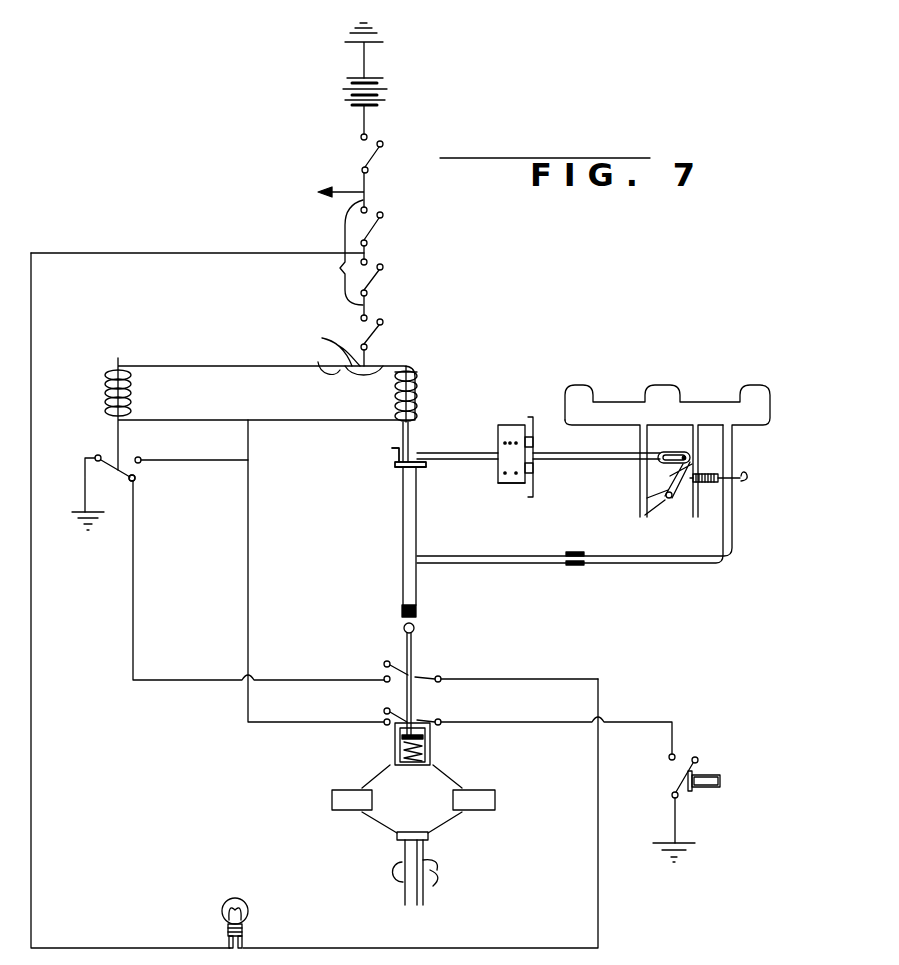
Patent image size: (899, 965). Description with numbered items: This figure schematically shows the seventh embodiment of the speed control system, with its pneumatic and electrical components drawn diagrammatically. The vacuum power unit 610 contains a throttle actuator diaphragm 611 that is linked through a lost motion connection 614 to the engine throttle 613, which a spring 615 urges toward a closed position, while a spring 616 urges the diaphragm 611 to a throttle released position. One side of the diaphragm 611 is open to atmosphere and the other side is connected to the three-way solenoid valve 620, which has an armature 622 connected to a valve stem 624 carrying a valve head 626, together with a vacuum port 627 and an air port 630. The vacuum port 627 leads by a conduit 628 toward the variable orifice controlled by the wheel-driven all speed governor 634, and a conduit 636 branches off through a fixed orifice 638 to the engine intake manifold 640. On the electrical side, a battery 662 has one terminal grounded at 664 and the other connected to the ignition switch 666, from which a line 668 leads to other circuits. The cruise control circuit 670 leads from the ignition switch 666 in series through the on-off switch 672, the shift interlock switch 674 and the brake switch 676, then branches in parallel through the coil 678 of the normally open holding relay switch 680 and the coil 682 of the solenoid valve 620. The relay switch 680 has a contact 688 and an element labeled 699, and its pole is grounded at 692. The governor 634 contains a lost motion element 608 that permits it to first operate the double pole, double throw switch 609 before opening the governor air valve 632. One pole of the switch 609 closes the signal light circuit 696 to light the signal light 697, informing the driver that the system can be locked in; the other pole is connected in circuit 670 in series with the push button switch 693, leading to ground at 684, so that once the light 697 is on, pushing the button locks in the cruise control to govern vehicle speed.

The ground 664 is at (378, 34).
The battery 662 is at (385, 83).
The ignition switch 666 is at (376, 157).
The line to other circuits 668 is at (345, 192).
The cruise control circuit line 670 is at (702, 815).
The on-off switch 672 is at (378, 229).
The shift interlock switch 674 is at (378, 281).
The brake switch 676 is at (375, 330).
The coil of holding relay switch 678 is at (131, 393).
The coil of solenoid valve 682 is at (394, 388).
The armature 622 is at (413, 384).
The three-way solenoid valve 620 is at (390, 440).
The valve stem 624 is at (410, 424).
The air port 630 is at (409, 440).
The valve head 626 is at (420, 456).
The vacuum port 627 is at (400, 470).
The conduit 628 is at (404, 503).
The throttle actuator diaphragm 611 is at (530, 440).
The vacuum power unit 610 is at (508, 418).
The spring 616 is at (500, 488).
The engine intake manifold 640 is at (740, 412).
The conduit 636 is at (502, 565).
The fixed orifice 638 is at (570, 552).
The lost motion connection 614 is at (672, 450).
The engine throttle 613 is at (655, 502).
The spring 615 is at (705, 482).
The holding relay switch 680 is at (108, 446).
The ground 692 is at (95, 541).
The contact of relay switch 688 is at (142, 458).
The contact 699 is at (136, 480).
The signal light circuit 696 is at (135, 572).
The governor air valve 632 is at (416, 629).
The double pole, double throw switch 609 is at (418, 712).
The lost motion element 608 is at (432, 752).
The governor 634 is at (370, 834).
The push button switch 693 is at (706, 776).
The ground 684 is at (690, 855).
The signal light 697 is at (236, 898).